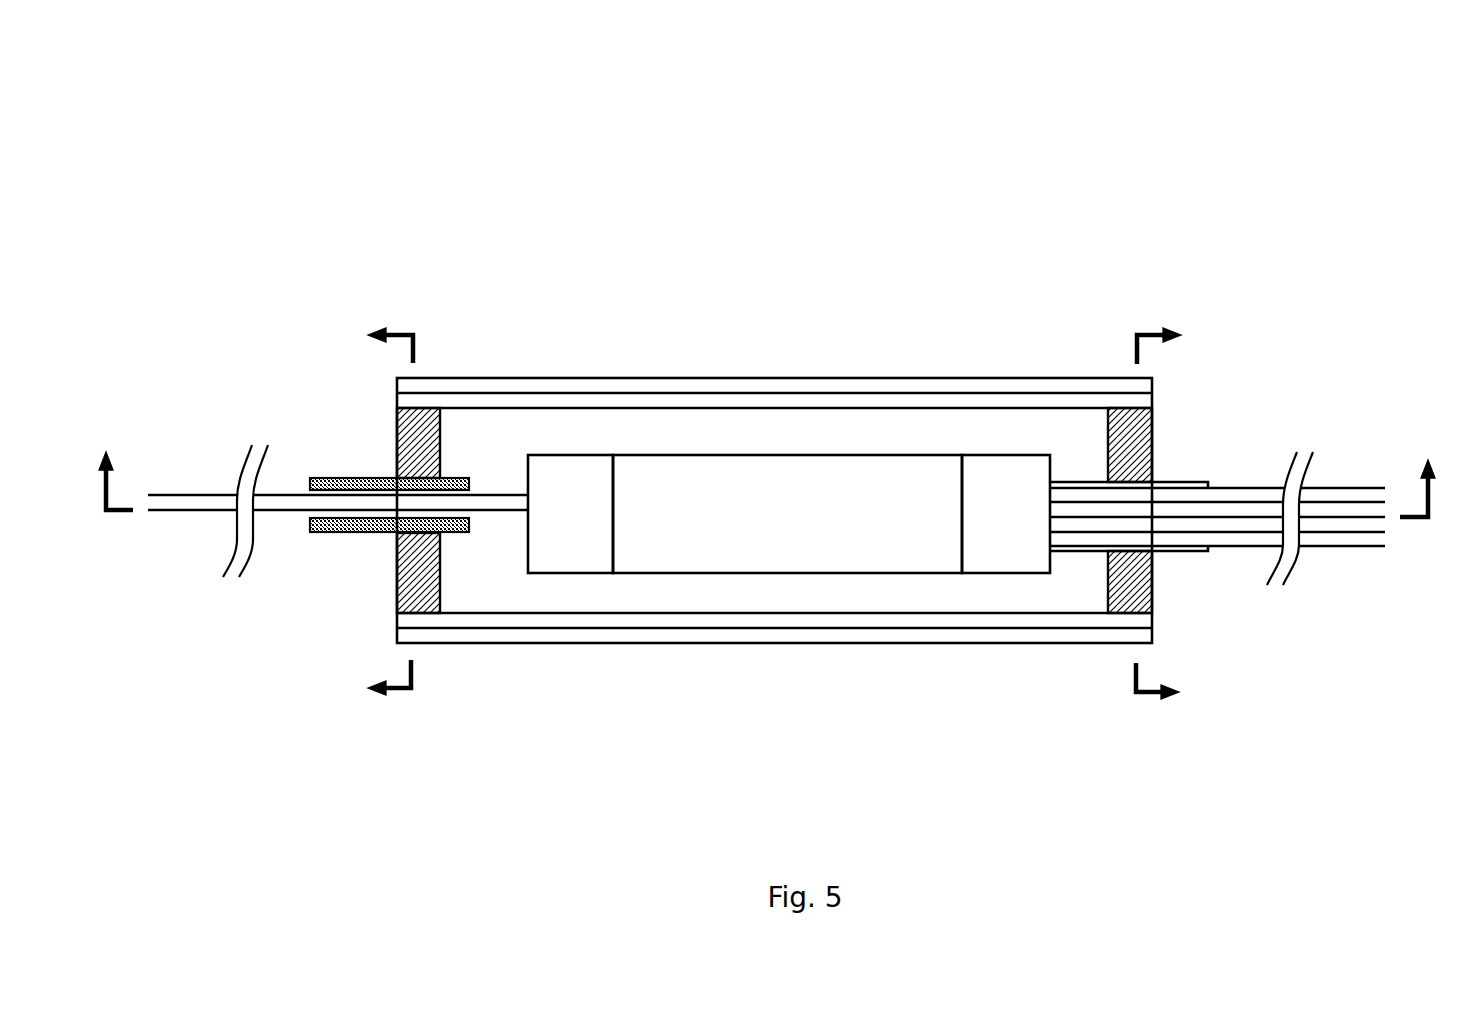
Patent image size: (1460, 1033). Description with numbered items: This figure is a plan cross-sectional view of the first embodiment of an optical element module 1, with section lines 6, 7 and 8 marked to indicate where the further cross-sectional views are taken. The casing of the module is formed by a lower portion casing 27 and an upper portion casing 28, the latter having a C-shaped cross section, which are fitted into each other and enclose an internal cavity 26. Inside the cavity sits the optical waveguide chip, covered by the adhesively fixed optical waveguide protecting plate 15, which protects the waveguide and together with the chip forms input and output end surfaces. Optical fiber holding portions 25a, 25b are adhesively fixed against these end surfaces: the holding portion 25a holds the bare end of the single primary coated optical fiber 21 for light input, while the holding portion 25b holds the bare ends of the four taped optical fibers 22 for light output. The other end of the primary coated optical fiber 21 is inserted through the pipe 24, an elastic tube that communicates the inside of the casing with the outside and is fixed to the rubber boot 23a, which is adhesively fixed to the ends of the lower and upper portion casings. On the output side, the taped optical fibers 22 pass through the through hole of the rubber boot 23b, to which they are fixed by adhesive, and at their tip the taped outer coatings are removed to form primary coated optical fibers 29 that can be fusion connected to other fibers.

The optical element module 1 is at (760, 234).
The optical waveguide protecting plate 15 is at (715, 485).
The primary coated optical fiber 21 is at (195, 495).
The taped optical fibers 22 is at (1200, 482).
The rubber boot 23a is at (397, 590).
The rubber boot 23b is at (1152, 592).
The pipe 24 is at (310, 533).
The optical fiber holding portion 25a is at (570, 485).
The optical fiber holding portion 25b is at (977, 487).
The internal cavity 26 is at (847, 427).
The lower portion casing 27 is at (541, 402).
The upper portion casing 28 is at (442, 388).
The primary coated optical fibers 29 is at (1327, 485).
The section line 6-6' 6 is at (768, 458).
The section line 7-7' 7 is at (374, 510).
The section line 8-8' 8 is at (1175, 516).